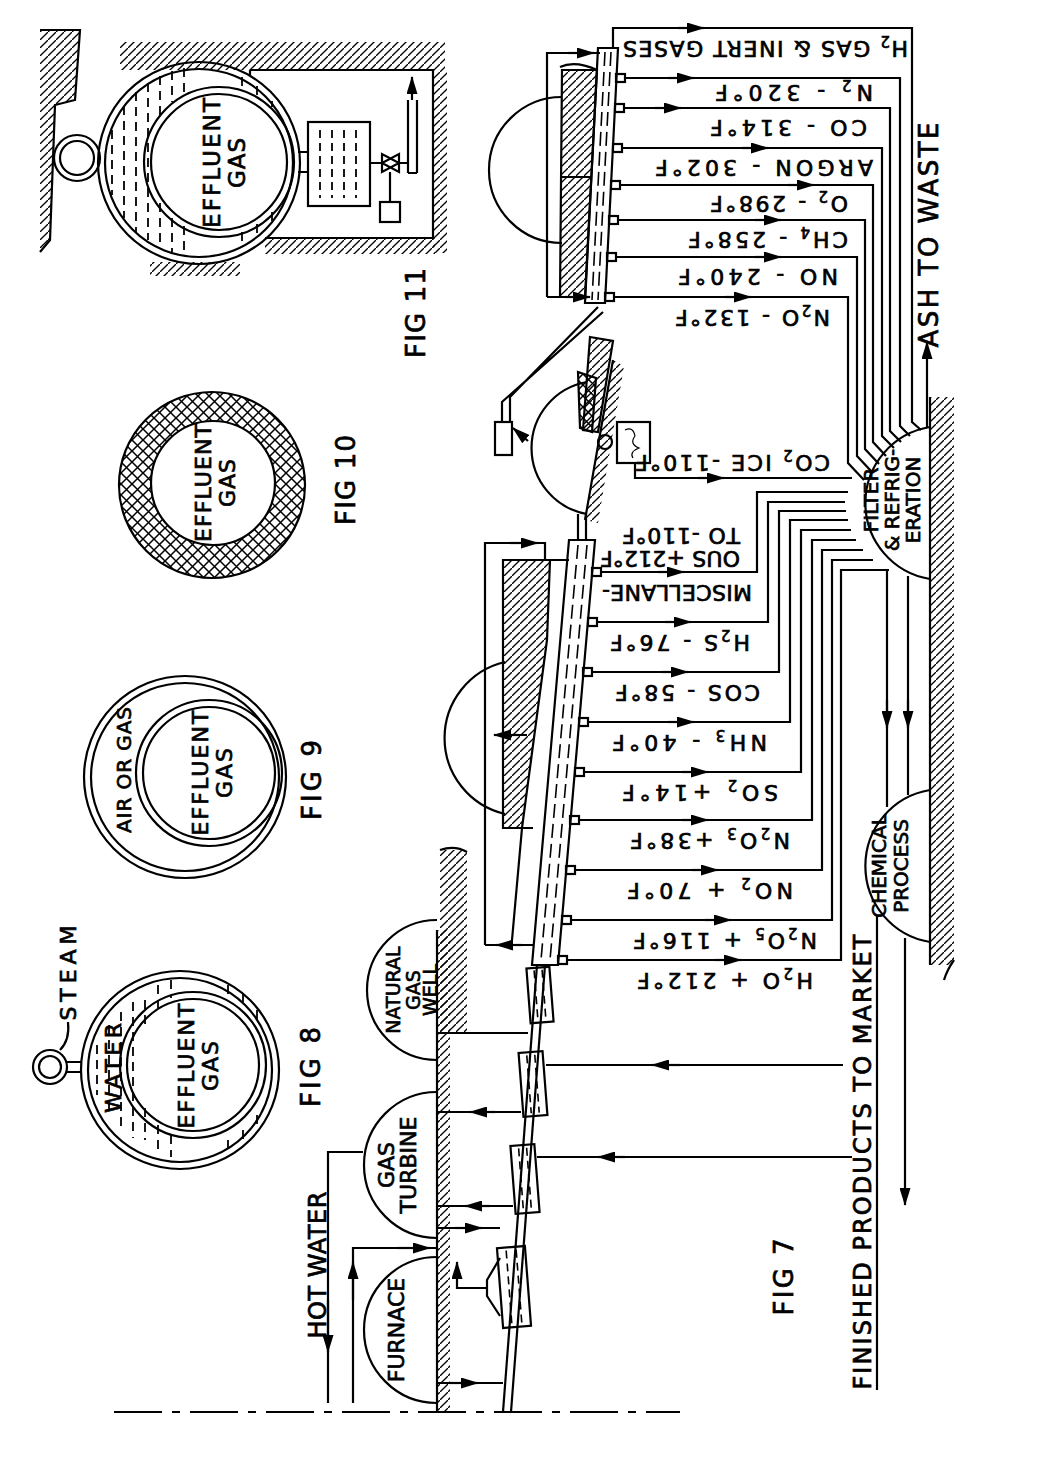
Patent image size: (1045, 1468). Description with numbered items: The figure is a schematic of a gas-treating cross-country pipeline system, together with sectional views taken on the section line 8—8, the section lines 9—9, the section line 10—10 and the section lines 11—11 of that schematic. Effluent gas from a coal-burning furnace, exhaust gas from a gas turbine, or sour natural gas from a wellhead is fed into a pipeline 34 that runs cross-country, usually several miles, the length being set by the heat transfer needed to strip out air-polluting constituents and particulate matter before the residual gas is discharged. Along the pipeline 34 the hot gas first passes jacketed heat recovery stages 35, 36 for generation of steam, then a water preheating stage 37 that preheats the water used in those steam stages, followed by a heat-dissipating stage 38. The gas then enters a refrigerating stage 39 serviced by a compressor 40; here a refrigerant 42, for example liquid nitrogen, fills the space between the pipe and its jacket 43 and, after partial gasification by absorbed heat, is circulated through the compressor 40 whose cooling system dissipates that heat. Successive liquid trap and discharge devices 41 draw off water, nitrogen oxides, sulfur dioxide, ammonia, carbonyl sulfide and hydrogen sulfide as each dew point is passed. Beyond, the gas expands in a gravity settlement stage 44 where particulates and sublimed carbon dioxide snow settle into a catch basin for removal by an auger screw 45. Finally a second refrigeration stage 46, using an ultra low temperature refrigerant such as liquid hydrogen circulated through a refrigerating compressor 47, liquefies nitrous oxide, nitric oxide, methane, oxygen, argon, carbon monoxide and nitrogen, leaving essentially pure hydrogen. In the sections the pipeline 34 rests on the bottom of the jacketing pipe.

In FIG. 7, the section line 8— 8 is at (490, 1262).
In FIG. 7, the section lines 9— 9 is at (507, 1084).
In FIG. 7, the section line 10— 10 is at (518, 987).
In FIG. 7, the section lines 11— 11 is at (504, 892).
In FIG. 7, the pipeline 34 is at (548, 1032).
In FIG. 8, the pipeline 34 is at (246, 997).
In FIG. 9, the pipeline 34 is at (262, 702).
In FIG. 10, the pipeline 34 is at (272, 418).
In FIG. 11, the pipeline 34 is at (240, 255).
In FIG. 7, the jacketed heat recovery stage 35 is at (529, 1290).
In FIG. 7, the jacketed heat recovery stage 36 is at (538, 1176).
In FIG. 7, the water preheating stage 37 is at (546, 1088).
In FIG. 7, the heat-dissipating stage 38 is at (553, 1001).
In FIG. 7, the refrigerating stage 39 is at (543, 623).
In FIG. 11, the refrigerating stage 39 is at (110, 228).
In FIG. 7, the compressor 40 is at (438, 696).
In FIG. 7, the liquid trap and discharge devices 41 is at (563, 927).
In FIG. 11, the liquid trap and discharge devices 41 is at (385, 225).
In FIG. 11, the refrigerant 42 is at (182, 260).
In FIG. 7, the jacket 43 is at (448, 800).
In FIG. 11, the jacket 43 is at (138, 248).
In FIG. 7, the gravity settlement stage 44 is at (513, 477).
In FIG. 7, the auger screw 45 is at (603, 425).
In FIG. 7, the second refrigeration stage 46 is at (563, 307).
In FIG. 7, the refrigerating compressor 47 is at (512, 240).